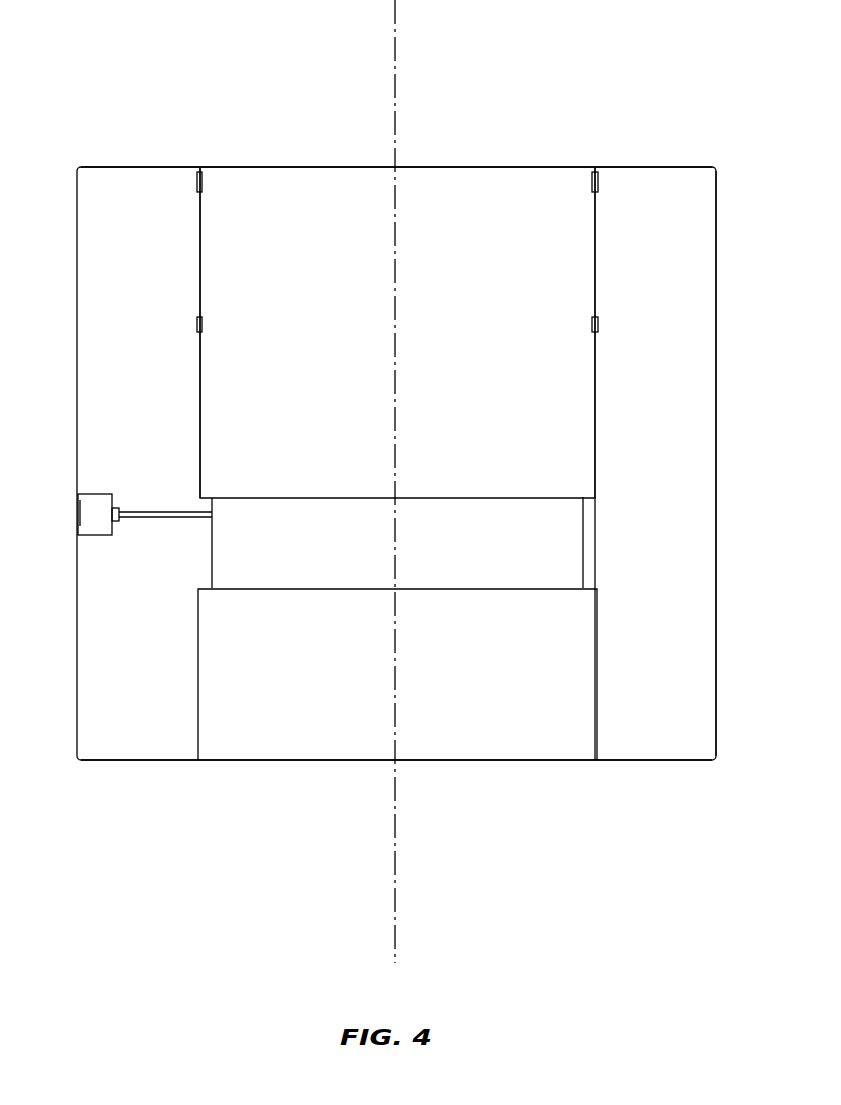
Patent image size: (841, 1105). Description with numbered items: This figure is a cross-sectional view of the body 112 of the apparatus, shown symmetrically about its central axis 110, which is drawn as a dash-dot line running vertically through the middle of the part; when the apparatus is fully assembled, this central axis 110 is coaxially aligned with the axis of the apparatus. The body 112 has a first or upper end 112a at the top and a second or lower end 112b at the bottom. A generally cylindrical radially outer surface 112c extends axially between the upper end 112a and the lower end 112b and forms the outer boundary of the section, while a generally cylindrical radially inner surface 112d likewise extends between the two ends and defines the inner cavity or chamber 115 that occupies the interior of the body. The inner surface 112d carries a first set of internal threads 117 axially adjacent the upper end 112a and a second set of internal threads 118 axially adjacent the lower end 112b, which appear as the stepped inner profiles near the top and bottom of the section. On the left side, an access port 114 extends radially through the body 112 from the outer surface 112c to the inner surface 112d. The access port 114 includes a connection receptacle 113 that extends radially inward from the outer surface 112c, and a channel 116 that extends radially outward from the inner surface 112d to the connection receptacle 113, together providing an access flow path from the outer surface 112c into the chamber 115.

The central axis 110 is at (394, 33).
The body 112 is at (117, 64).
The upper end 112a is at (672, 168).
The lower end 112b is at (650, 762).
The radially outer surface 112c is at (716, 530).
The radially inner surface 112d is at (595, 310).
The connection receptacle 113 is at (93, 494).
The access port 114 is at (97, 541).
The inner chamber 115 is at (288, 186).
The channel 116 is at (166, 510).
The first set of internal threads 117 is at (205, 270).
The second set of internal threads 118 is at (198, 695).